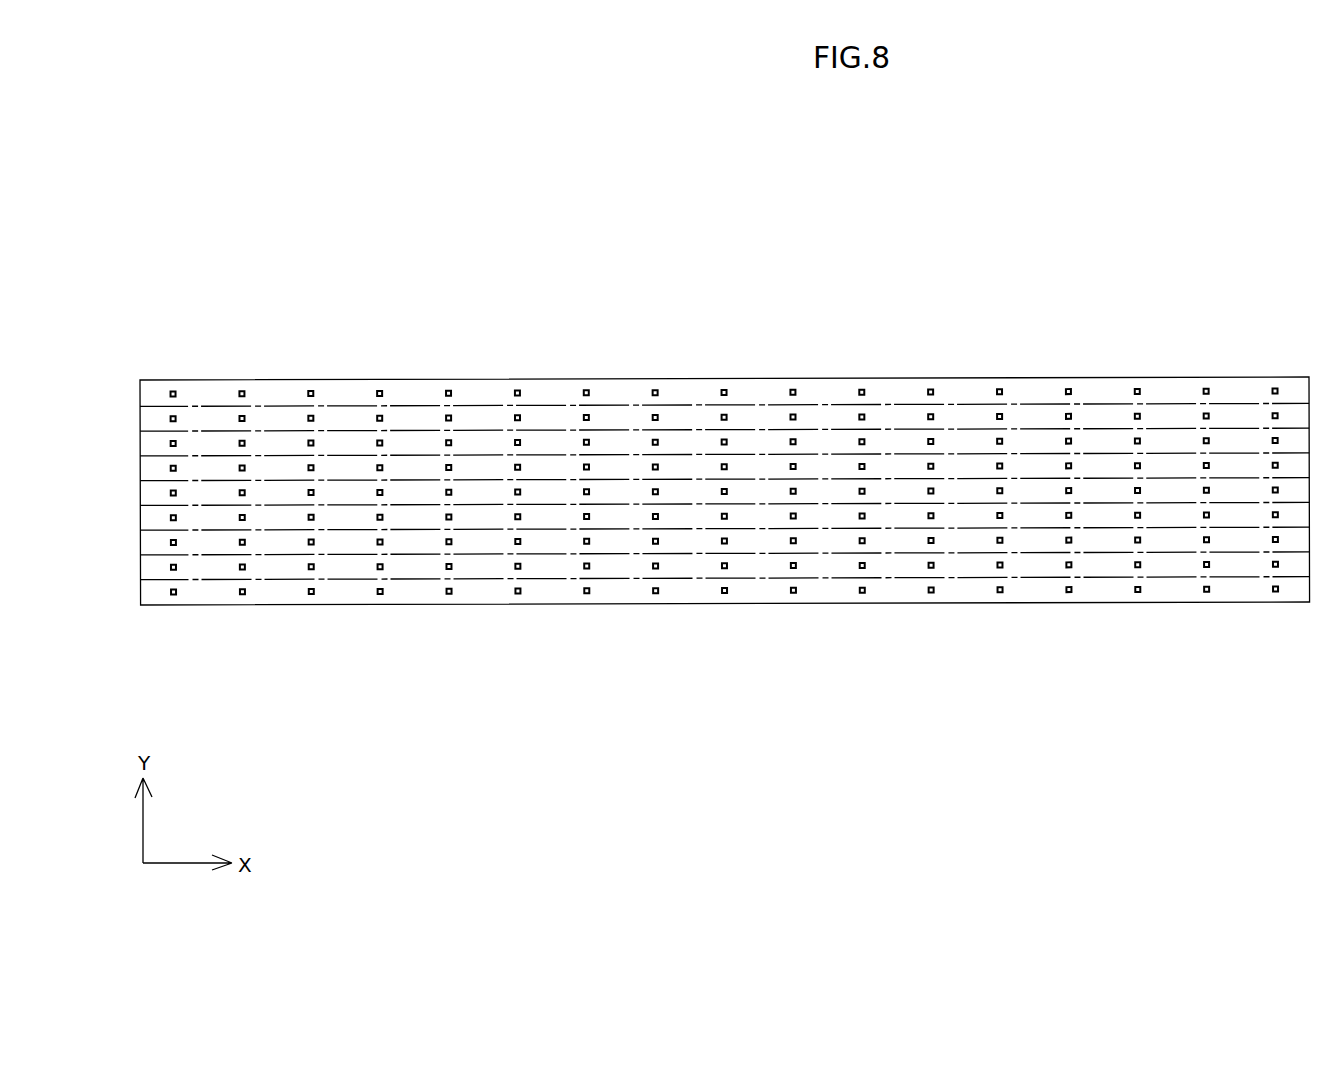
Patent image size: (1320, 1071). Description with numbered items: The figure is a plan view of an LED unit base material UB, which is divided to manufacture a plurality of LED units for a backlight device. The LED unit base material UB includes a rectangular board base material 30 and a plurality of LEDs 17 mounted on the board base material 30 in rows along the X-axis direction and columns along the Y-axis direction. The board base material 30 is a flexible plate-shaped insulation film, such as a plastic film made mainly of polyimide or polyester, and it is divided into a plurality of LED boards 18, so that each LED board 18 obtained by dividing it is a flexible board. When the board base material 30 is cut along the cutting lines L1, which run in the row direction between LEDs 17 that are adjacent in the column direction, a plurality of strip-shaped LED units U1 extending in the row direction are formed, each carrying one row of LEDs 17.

The LED 17 is at (311, 390).
The LED board 18 is at (147, 443).
The board base material 30 is at (1243, 361).
The cutting line L1 is at (393, 455).
The LED unit U1 is at (1114, 446).
The LED unit base material UB is at (153, 627).